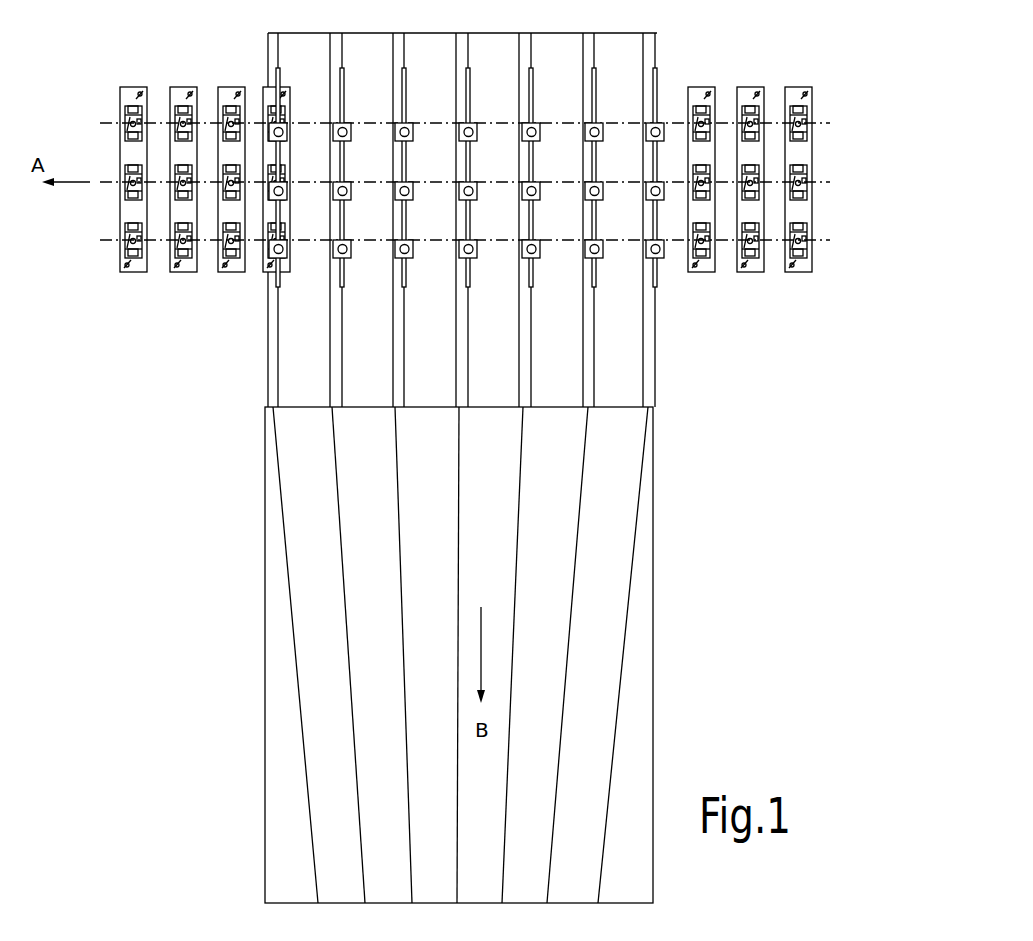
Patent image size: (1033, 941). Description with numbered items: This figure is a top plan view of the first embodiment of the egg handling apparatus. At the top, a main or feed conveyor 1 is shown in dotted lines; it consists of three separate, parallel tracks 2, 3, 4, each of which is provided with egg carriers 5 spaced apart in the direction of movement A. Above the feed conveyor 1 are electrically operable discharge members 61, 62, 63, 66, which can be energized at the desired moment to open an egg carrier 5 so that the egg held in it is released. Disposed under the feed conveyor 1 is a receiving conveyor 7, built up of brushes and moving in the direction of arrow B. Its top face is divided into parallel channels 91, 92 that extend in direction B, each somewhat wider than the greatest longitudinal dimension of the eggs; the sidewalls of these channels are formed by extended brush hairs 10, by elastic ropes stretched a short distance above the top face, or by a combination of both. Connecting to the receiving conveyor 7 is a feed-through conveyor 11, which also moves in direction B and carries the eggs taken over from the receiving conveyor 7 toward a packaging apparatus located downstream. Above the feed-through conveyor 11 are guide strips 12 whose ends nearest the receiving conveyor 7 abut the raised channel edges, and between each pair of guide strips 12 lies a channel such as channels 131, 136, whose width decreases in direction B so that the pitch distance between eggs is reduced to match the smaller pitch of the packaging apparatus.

The feed conveyor 1 is at (833, 86).
The track 2 is at (830, 123).
The track 3 is at (830, 182).
The track 4 is at (830, 240).
The egg carrier 5 is at (753, 262).
The discharge member 61 is at (350, 258).
The discharge member 62 is at (413, 258).
The discharge member 63 is at (477, 258).
The discharge member 66 is at (665, 258).
The receiving conveyor 7 is at (307, 352).
The channel 91 is at (302, 388).
The channel 92 is at (370, 385).
The extended brush hairs 10 is at (335, 327).
The feed-through conveyor 11 is at (640, 637).
The guide strip 12 is at (577, 548).
The channel 131 is at (317, 706).
The channel 136 is at (598, 710).